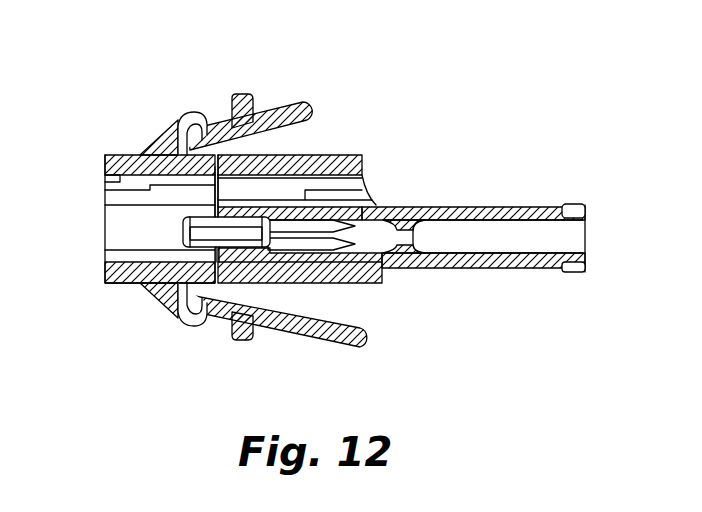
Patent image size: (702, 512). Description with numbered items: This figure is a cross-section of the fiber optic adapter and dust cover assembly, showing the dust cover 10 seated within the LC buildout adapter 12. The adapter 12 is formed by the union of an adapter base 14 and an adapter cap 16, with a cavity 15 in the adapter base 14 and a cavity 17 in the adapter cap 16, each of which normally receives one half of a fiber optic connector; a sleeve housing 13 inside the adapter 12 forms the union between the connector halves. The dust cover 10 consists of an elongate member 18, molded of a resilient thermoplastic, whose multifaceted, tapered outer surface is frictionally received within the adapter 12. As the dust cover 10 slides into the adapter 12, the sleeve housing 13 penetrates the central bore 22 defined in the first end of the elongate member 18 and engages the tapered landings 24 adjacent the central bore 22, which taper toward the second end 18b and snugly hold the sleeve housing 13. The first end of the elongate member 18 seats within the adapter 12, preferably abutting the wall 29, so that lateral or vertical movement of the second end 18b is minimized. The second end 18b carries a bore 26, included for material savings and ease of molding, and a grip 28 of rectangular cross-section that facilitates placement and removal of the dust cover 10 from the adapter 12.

The dust cover 10 is at (464, 281).
The LC buildout adapter 12 is at (195, 106).
The sleeve housing 13 is at (216, 224).
The adapter base 14 is at (131, 154).
The cavity 15 is at (105, 232).
The adapter cap 16 is at (331, 333).
The cavity 17 is at (378, 216).
The elongate member 18 is at (476, 208).
The second end 18b is at (580, 272).
The central bore 22 is at (366, 233).
The landings 24 is at (313, 220).
The bore 26 is at (510, 265).
The grip 28 is at (570, 204).
The wall 29 is at (190, 282).